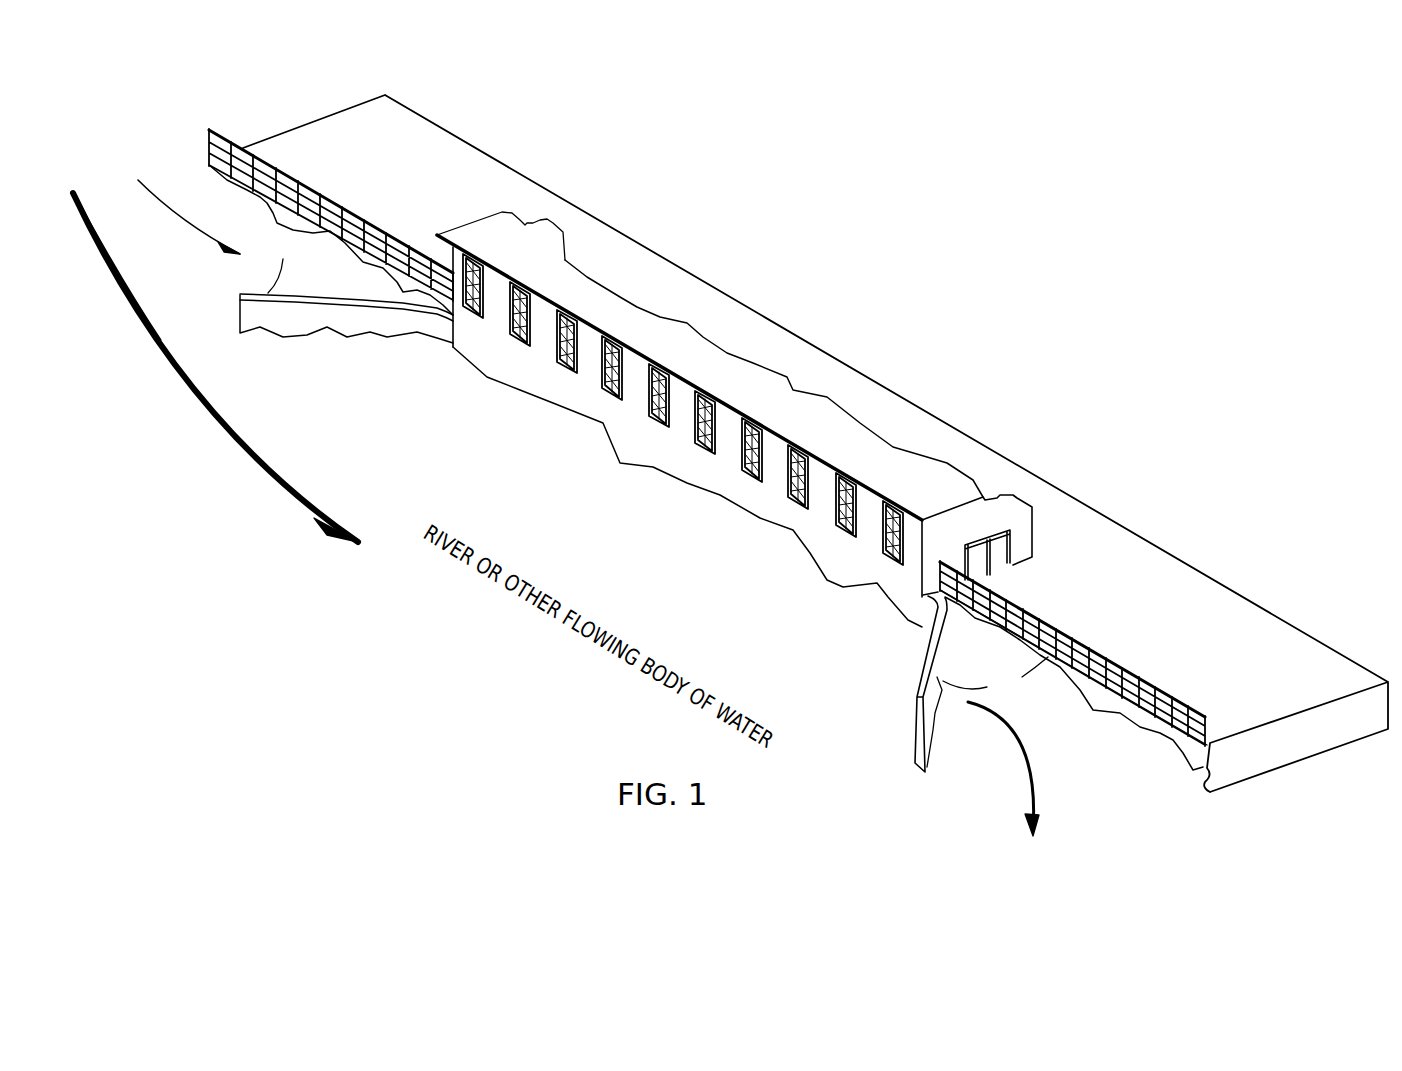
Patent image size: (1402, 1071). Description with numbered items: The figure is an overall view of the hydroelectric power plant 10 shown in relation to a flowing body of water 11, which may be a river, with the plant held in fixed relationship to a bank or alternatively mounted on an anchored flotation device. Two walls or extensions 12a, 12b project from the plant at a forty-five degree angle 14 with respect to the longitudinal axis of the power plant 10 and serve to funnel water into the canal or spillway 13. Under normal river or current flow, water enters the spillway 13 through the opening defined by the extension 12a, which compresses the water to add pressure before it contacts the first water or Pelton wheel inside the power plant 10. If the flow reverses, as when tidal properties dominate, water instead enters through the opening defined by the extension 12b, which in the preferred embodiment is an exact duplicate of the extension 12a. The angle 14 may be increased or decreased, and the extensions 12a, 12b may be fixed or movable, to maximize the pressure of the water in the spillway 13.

The hydroelectric power plant 10 is at (773, 397).
The flowing body of water 11 is at (133, 210).
The wall or extension 12a is at (338, 322).
The wall or extension 12b is at (917, 680).
The canal or spillway 13 is at (398, 297).
The 45° angle 14 is at (276, 246).